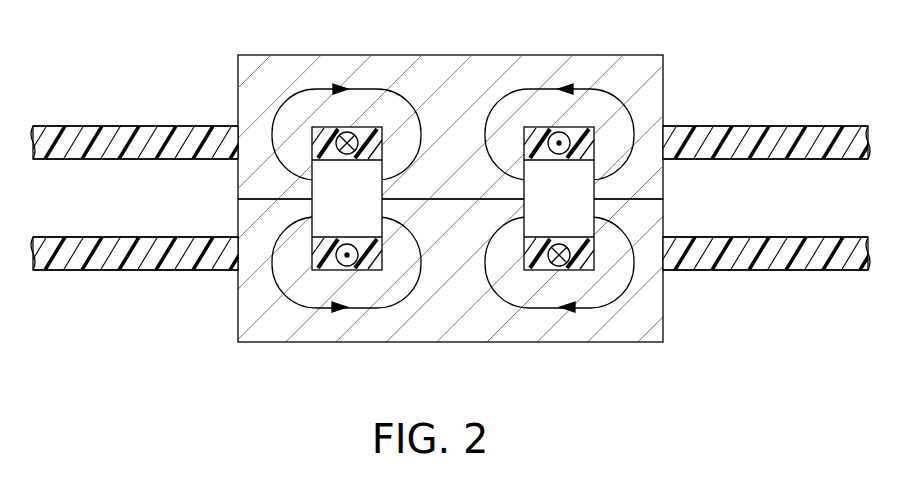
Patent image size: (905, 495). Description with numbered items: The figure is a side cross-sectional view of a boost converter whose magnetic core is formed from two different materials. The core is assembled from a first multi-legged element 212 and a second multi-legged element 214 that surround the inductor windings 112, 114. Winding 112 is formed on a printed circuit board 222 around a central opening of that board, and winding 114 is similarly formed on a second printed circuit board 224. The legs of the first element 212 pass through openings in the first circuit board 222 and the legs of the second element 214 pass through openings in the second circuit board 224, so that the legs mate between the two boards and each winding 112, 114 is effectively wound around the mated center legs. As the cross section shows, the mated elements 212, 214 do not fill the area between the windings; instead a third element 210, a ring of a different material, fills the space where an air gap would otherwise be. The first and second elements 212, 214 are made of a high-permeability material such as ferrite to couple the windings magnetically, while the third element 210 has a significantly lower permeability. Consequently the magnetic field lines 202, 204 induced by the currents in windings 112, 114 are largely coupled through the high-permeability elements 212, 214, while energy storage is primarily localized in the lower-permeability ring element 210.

The winding 112 is at (347, 132).
The winding 114 is at (348, 266).
The magnetic field lines 202 is at (390, 89).
The magnetic field lines 204 is at (624, 352).
The third element 210 is at (324, 210).
The first multi-legged element 212 is at (471, 115).
The second multi-legged element 214 is at (477, 322).
The printed circuit board 222 is at (786, 126).
The second printed circuit board 224 is at (786, 237).